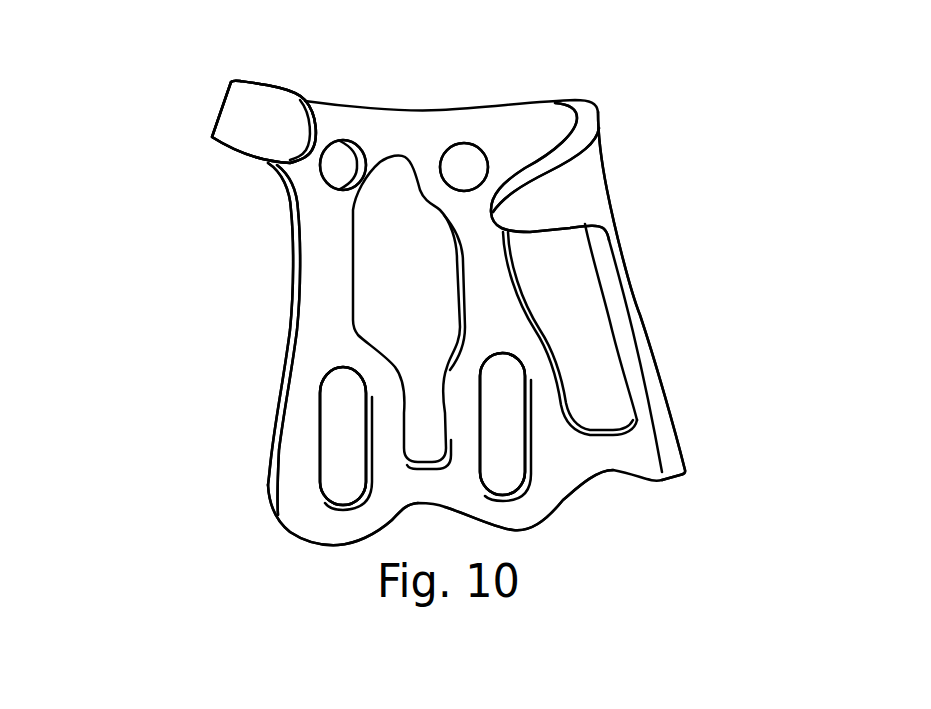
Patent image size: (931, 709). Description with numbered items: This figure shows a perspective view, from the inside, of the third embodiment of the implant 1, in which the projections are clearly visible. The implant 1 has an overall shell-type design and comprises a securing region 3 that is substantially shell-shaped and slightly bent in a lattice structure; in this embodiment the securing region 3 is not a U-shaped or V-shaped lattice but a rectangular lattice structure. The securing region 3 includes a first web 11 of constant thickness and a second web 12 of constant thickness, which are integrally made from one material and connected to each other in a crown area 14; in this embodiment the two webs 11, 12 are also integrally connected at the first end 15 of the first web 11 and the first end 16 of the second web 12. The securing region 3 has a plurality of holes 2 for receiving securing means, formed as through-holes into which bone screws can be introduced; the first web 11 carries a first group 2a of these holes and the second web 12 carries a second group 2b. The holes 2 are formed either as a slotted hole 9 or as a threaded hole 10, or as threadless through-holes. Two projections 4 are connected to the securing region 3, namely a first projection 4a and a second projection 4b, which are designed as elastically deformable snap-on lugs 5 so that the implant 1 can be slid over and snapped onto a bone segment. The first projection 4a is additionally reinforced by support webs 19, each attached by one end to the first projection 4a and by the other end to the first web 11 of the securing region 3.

The implant 1 is at (662, 196).
The holes for receiving securing means 2 is at (343, 163).
The first group of holes 2a is at (552, 435).
The second group of holes 2b is at (287, 457).
The securing region 3 is at (317, 289).
The projections 4 is at (255, 131).
The first projection 4a is at (567, 196).
The second projection 4b is at (255, 131).
The snap-on lugs 5 is at (567, 196).
The slotted hole 9 is at (510, 475).
The threaded hole 10 is at (465, 168).
The first web 11 is at (490, 280).
The second web 12 is at (322, 253).
The crown area 14 is at (403, 140).
The first end of the first web 15 is at (543, 531).
The first end of the second web 16 is at (334, 550).
The support webs 19 is at (633, 367).